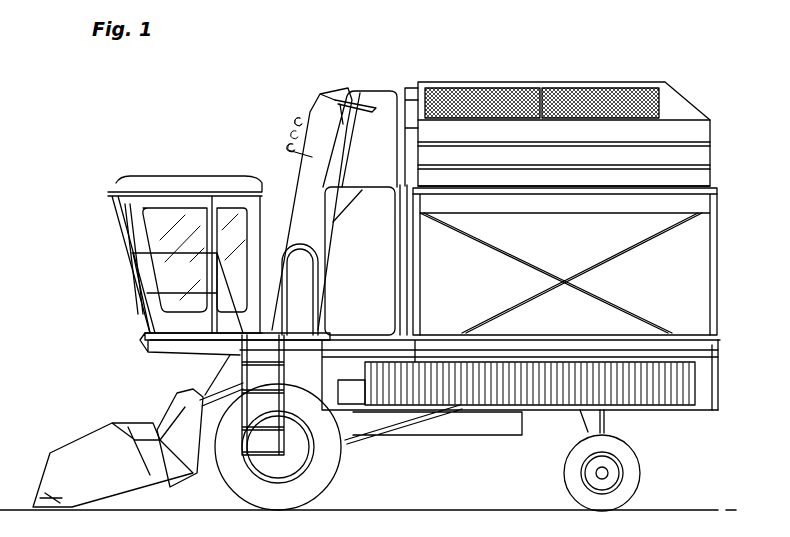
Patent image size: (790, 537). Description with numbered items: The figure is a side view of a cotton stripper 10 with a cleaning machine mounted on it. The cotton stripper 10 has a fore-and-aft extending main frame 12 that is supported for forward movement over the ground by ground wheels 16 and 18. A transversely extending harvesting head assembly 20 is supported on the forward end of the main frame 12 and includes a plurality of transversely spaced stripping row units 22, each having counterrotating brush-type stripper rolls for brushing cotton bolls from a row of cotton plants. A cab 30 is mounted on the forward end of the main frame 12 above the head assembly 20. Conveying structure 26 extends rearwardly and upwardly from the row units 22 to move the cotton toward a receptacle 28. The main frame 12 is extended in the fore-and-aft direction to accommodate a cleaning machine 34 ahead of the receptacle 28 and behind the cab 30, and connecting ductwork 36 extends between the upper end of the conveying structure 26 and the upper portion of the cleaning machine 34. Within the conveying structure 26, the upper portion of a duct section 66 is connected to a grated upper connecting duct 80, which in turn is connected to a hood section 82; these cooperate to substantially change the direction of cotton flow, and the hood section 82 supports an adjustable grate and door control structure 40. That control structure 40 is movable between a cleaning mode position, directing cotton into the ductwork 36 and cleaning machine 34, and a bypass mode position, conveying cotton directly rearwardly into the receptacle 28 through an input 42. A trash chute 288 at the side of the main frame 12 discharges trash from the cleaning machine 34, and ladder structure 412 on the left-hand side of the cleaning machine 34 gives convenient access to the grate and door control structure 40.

The cotton stripper 10 is at (690, 77).
The main frame 12 is at (720, 346).
The ground wheel 16 is at (340, 468).
The ground wheel 18 is at (565, 466).
The harvesting head assembly 20 is at (110, 400).
The stripping row unit 22 is at (80, 438).
The conveying structure 26 is at (256, 132).
The receptacle 28 is at (472, 82).
The cab 30 is at (177, 174).
The cleaning machine 34 is at (404, 284).
The connecting ductwork 36 is at (399, 140).
The grate and door control structure 40 is at (340, 72).
The input 42 is at (412, 88).
The duct section 66 is at (292, 190).
The grated upper connecting duct 80 is at (284, 124).
The hood section 82 is at (302, 106).
The trash chute 288 is at (370, 412).
The ladder structure 412 is at (336, 266).